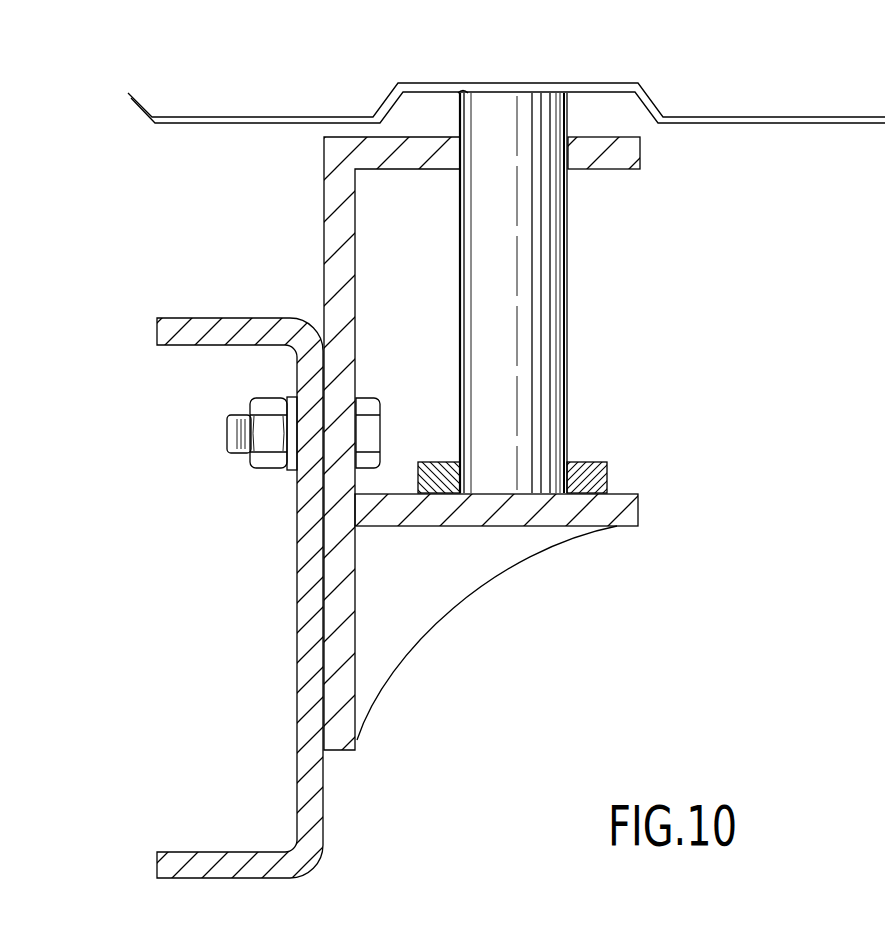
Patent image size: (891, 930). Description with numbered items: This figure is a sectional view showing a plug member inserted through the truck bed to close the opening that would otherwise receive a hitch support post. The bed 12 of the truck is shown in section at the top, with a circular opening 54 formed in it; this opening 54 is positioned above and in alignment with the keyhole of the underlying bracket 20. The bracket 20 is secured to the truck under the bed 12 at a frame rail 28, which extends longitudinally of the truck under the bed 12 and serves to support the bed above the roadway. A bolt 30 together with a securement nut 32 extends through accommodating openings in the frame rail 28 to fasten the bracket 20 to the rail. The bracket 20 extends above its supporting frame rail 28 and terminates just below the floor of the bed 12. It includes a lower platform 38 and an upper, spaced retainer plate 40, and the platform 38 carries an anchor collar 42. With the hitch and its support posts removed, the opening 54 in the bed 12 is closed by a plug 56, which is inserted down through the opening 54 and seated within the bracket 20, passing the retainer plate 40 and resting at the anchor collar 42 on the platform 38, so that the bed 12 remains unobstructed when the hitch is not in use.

The bed 12 is at (727, 117).
The bracket 20 is at (318, 222).
The frame rail 28 is at (292, 601).
The bolt 30 is at (367, 431).
The securement nut 32 is at (265, 466).
The lower platform 38 is at (639, 508).
The retainer plate 40 is at (641, 152).
The anchor collar 42 is at (587, 462).
The circular opening 54 is at (468, 94).
The plug 56 is at (537, 258).